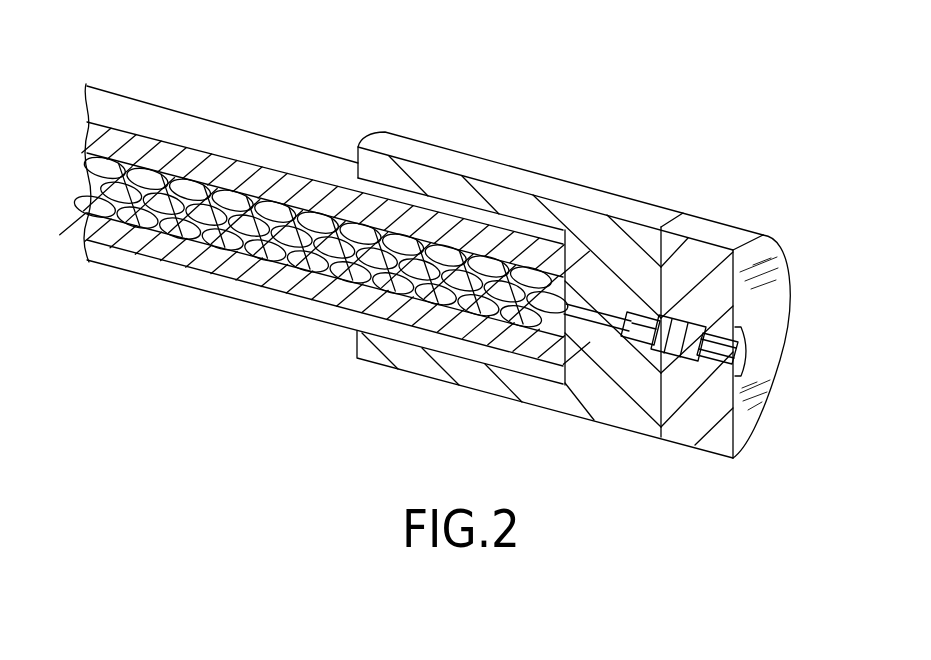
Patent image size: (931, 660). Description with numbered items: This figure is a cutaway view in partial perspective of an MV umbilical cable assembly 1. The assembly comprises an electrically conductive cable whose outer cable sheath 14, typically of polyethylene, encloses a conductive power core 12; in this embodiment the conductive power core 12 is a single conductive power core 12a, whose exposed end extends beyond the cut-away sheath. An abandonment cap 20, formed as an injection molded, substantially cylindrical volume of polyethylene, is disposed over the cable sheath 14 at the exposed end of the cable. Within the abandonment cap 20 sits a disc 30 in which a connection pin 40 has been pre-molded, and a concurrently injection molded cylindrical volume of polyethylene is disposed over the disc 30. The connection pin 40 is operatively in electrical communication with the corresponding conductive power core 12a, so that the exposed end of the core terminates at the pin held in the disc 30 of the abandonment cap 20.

The umbilical cable assembly 1 is at (427, 290).
The conductive power core 12 is at (210, 222).
The single conductive power core 12a is at (603, 313).
The cable sheath 14 is at (258, 133).
The abandonment cap 20 is at (440, 146).
The disc 30 is at (718, 428).
The connection pin 40 is at (700, 328).